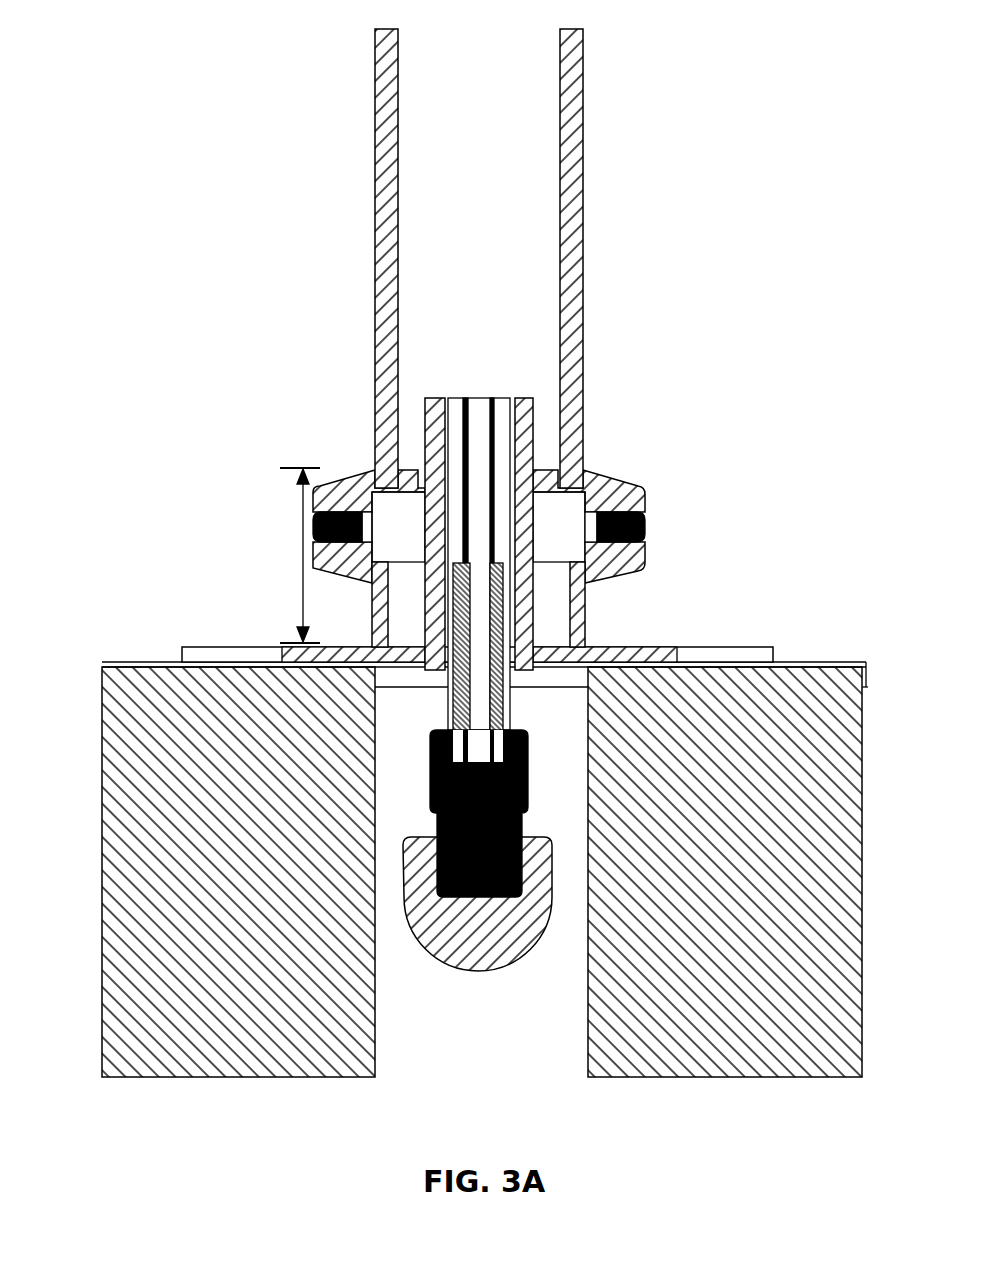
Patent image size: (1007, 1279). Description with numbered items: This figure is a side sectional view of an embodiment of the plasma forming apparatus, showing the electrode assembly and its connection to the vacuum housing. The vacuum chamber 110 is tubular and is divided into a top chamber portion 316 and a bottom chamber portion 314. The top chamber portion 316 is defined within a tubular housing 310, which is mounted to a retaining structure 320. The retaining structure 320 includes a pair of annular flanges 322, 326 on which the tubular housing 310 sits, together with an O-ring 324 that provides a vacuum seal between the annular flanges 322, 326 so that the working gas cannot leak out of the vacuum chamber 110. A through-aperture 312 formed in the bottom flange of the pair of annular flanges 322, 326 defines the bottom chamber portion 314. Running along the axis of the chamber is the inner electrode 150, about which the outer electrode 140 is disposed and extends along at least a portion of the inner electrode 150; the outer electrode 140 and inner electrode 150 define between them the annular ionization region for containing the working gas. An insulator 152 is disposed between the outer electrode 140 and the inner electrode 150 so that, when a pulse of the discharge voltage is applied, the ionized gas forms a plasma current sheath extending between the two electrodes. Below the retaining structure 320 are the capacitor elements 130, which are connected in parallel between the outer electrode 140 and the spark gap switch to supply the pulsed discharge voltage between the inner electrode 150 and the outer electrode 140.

The vacuum chamber 110 is at (505, 215).
The capacitor elements 130 is at (775, 705).
The outer electrode 140 is at (433, 452).
The inner electrode 150 is at (478, 407).
The insulator 152 is at (455, 690).
The tubular housing 310 is at (573, 125).
The through-aperture 312 is at (388, 600).
The bottom chamber portion 314 is at (557, 602).
The top chamber portion 316 is at (553, 258).
The retaining structure 320 is at (312, 562).
The annular flange 322 is at (627, 492).
The O-ring 324 is at (647, 532).
The annular flange 326 is at (627, 553).